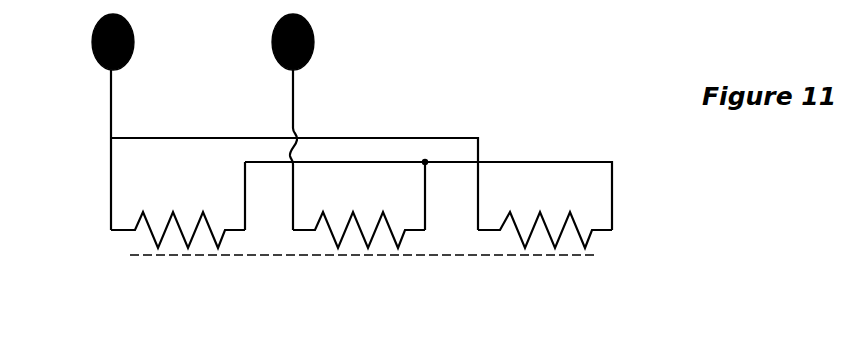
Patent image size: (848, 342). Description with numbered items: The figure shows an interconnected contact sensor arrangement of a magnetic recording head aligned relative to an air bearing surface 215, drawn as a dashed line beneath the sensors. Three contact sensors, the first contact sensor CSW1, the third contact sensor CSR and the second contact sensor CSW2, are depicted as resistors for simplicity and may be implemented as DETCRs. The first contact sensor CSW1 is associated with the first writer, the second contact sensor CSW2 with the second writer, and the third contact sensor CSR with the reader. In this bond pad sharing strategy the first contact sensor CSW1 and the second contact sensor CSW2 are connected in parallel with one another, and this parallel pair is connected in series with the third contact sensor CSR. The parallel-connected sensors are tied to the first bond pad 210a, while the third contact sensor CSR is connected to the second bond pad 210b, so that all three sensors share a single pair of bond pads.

The first bond pad 210a is at (91, 47).
The second bond pad 210b is at (315, 42).
The air bearing surface 215 is at (468, 258).
The first contact sensor CSW1 is at (178, 217).
The third contact sensor CSR is at (359, 217).
The second contact sensor CSW2 is at (545, 217).